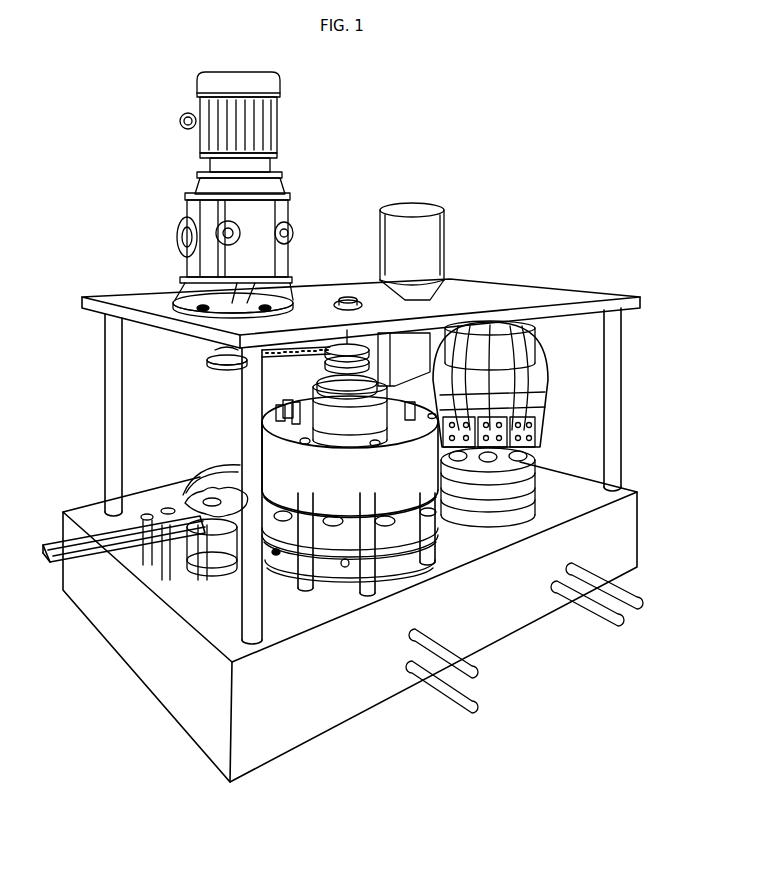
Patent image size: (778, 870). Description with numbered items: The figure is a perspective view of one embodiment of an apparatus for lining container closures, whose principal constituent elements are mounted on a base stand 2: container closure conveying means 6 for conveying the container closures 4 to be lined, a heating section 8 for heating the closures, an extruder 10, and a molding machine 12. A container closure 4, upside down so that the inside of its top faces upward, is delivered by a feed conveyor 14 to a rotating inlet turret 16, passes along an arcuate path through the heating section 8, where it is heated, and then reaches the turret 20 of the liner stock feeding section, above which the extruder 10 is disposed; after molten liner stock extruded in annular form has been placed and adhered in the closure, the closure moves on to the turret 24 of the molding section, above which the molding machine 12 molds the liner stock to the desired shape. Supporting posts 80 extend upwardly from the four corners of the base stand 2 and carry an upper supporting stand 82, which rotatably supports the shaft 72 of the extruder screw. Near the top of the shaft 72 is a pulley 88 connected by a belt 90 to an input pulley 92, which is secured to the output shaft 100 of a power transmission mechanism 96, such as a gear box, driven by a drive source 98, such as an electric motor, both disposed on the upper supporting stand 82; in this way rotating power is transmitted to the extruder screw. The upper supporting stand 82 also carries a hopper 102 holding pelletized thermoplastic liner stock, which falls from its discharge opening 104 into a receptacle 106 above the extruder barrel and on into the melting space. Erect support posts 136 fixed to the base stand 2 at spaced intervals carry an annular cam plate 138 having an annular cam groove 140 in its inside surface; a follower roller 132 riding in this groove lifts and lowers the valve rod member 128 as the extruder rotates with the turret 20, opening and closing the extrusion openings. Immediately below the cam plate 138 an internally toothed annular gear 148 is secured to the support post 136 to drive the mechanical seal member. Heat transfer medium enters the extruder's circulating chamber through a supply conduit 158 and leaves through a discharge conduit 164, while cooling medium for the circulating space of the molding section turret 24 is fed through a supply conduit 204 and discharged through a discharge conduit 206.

The base stand 2 is at (297, 709).
The container closure 4 is at (146, 512).
The container closure conveying means 6 is at (196, 486).
The heating section 8 is at (219, 462).
The extruder 10 is at (428, 470).
The molding machine 12 is at (550, 375).
The feed conveyor 14 is at (55, 540).
The inlet turret 16 is at (168, 507).
The turret in the liner stock feeding section 20 is at (336, 577).
The turret in the molding section 24 is at (535, 503).
The shaft 72 is at (357, 328).
The supporting posts 80 is at (621, 357).
The upper supporting stand 82 is at (553, 296).
The pulley 88 is at (341, 345).
The belt 90 is at (275, 352).
The input pulley 92 is at (208, 360).
The power transmission mechanism 96 is at (178, 222).
The drive source 98 is at (280, 118).
The output shaft 100 is at (215, 350).
The hopper 102 is at (446, 232).
The discharge opening 104 is at (396, 380).
The receptacle 106 is at (334, 398).
The valve rod member 128 is at (313, 414).
The follower roller 132 is at (313, 432).
The erect support posts 136 is at (434, 553).
The annular cam plate 138 is at (272, 452).
The annular cam groove 140 is at (285, 408).
The annular gear 148 is at (277, 555).
The supply conduit 158 is at (465, 707).
The discharge conduit 164 is at (480, 667).
The supply conduit 204 is at (636, 590).
The discharge conduit 206 is at (607, 621).